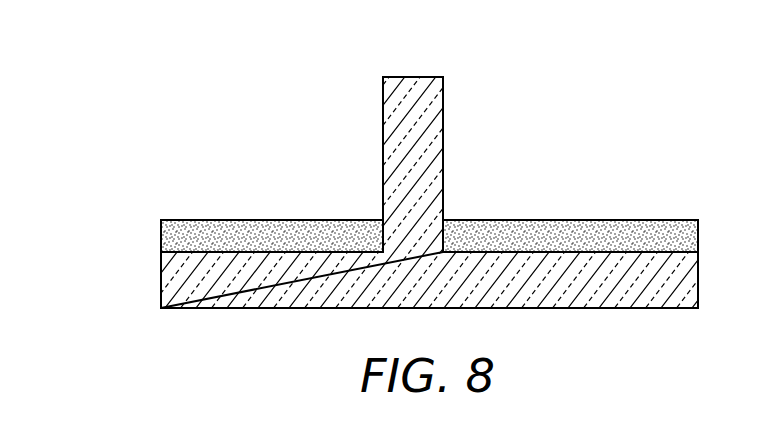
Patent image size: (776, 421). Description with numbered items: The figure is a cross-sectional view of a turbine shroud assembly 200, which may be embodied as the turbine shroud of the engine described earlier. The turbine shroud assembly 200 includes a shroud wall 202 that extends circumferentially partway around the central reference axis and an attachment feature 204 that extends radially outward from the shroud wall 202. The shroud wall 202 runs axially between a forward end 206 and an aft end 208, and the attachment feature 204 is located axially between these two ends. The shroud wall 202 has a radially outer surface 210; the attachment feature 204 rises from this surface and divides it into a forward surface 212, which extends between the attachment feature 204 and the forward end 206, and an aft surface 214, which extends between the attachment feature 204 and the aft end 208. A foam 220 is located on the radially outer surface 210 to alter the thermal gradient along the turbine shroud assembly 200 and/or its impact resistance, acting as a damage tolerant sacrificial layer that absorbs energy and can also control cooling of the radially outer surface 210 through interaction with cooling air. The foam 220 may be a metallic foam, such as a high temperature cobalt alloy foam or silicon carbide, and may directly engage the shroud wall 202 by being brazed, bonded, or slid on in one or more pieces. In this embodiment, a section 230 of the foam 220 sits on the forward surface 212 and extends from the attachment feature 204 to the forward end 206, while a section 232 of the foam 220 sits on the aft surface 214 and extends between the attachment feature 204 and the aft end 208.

The turbine shroud assembly 200 is at (583, 62).
The shroud wall 202 is at (685, 282).
The attachment feature 204 is at (432, 122).
The forward end 206 is at (162, 290).
The aft end 208 is at (698, 290).
The radially outer surface 210 is at (208, 253).
The forward surface 212 is at (272, 260).
The aft surface 214 is at (640, 252).
The foam 220 is at (185, 230).
The section of the foam 230 is at (313, 235).
The section of the foam 232 is at (575, 228).